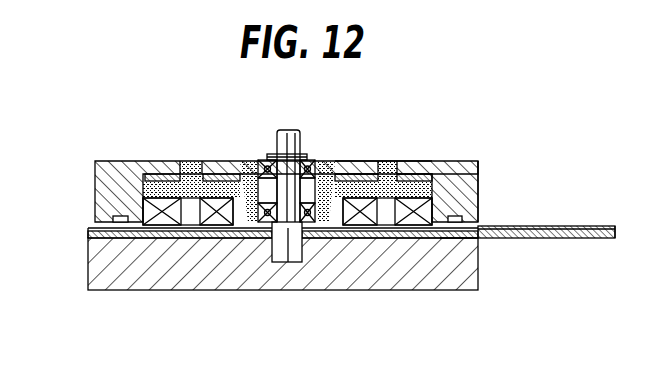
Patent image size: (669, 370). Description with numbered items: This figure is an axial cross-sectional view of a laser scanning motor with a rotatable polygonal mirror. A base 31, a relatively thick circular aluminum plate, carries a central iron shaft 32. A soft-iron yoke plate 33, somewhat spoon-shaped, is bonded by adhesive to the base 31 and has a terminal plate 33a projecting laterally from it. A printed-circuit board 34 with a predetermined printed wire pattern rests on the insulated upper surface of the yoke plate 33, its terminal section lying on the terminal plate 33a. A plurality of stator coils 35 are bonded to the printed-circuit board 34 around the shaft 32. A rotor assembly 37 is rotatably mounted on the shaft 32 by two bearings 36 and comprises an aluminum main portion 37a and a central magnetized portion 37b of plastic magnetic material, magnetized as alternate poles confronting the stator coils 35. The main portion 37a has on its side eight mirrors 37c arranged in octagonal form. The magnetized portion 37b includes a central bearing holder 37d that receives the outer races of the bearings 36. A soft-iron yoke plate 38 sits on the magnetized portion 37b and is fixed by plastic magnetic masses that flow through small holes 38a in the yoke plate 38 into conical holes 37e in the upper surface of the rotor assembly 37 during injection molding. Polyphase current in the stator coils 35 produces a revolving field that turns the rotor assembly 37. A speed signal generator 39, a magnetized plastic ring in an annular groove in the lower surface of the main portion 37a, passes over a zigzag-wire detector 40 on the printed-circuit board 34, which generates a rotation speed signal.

The base 31 is at (97, 284).
The shaft 32 is at (280, 258).
The yoke plate 33 is at (91, 233).
The terminal plate 33a is at (613, 233).
The printed-circuit board 34 is at (560, 225).
The stator coils 35 is at (163, 223).
The bearings 36 is at (305, 160).
The rotor assembly 37 is at (434, 157).
The main portion 37a is at (467, 172).
The magnetized portion 37b is at (383, 165).
The mirrors 37c is at (483, 179).
The central bearing holder 37d is at (246, 166).
The conical holes 37e is at (185, 155).
The yoke plate 38 is at (214, 176).
The small holes 38a is at (181, 164).
The speed signal generator 39 is at (112, 215).
The detector 40 is at (461, 239).